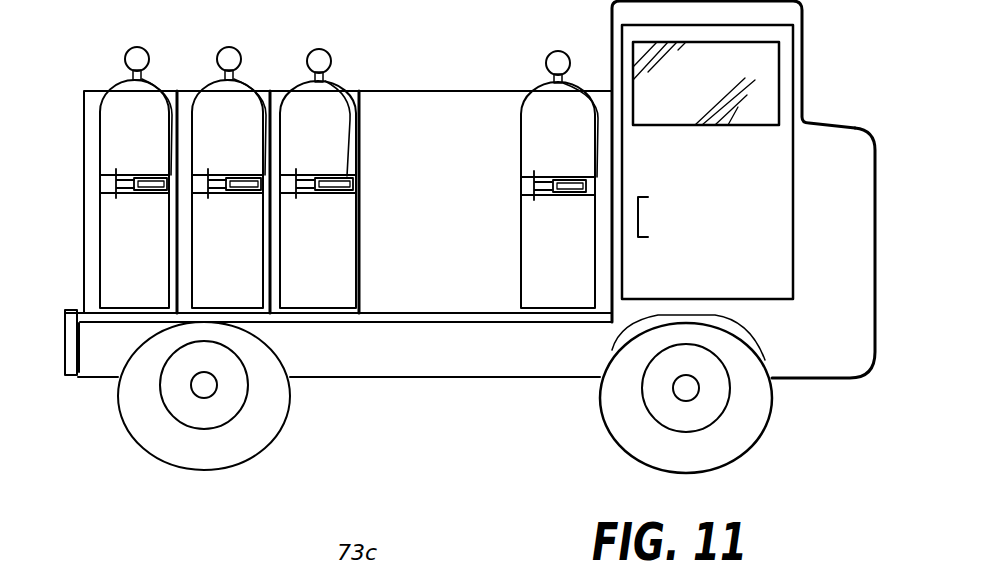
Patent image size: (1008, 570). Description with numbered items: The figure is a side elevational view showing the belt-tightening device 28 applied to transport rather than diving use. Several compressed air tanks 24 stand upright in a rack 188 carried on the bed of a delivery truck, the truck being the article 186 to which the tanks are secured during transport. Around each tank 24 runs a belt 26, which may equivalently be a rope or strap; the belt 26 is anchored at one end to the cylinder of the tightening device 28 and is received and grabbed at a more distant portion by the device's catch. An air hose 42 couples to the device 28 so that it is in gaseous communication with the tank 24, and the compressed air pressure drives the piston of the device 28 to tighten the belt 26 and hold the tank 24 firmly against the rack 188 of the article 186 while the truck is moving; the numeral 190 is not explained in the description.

The air tank 24 is at (146, 291).
The belt 26 is at (105, 198).
The tightening device 28 is at (148, 150).
The air hose 42 is at (167, 108).
The article 186 is at (836, 66).
The rack 188 is at (412, 323).
The hood 190 is at (877, 138).